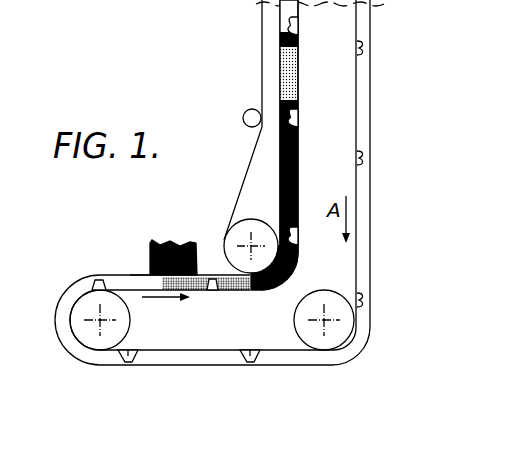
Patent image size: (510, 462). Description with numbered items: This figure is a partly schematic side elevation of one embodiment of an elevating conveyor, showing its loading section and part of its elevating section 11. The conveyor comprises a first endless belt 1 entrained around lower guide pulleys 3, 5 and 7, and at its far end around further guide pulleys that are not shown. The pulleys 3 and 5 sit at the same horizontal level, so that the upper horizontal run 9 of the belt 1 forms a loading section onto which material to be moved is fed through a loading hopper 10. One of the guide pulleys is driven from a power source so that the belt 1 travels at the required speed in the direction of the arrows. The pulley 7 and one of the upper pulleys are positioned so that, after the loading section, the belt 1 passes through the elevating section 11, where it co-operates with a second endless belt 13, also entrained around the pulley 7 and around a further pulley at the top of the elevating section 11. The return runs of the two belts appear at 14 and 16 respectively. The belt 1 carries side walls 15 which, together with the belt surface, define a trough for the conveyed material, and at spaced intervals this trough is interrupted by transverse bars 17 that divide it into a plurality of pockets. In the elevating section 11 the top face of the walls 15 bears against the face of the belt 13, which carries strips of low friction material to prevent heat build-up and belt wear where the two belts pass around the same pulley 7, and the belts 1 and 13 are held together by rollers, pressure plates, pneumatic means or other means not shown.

The first endless belt 1 is at (179, 367).
The lower guide pulley 3 is at (78, 307).
The lower guide pulley 5 is at (337, 335).
The lower guide pulley 7 is at (242, 221).
The upper horizontal run 9 is at (139, 269).
The loading hopper 10 is at (152, 250).
The elevating section 11 is at (274, 83).
The second endless belt 13 is at (262, 55).
The return run 14 is at (372, 99).
The side walls 15 is at (287, 11).
The return run 16 is at (256, 98).
The transverse bars 17 is at (357, 48).